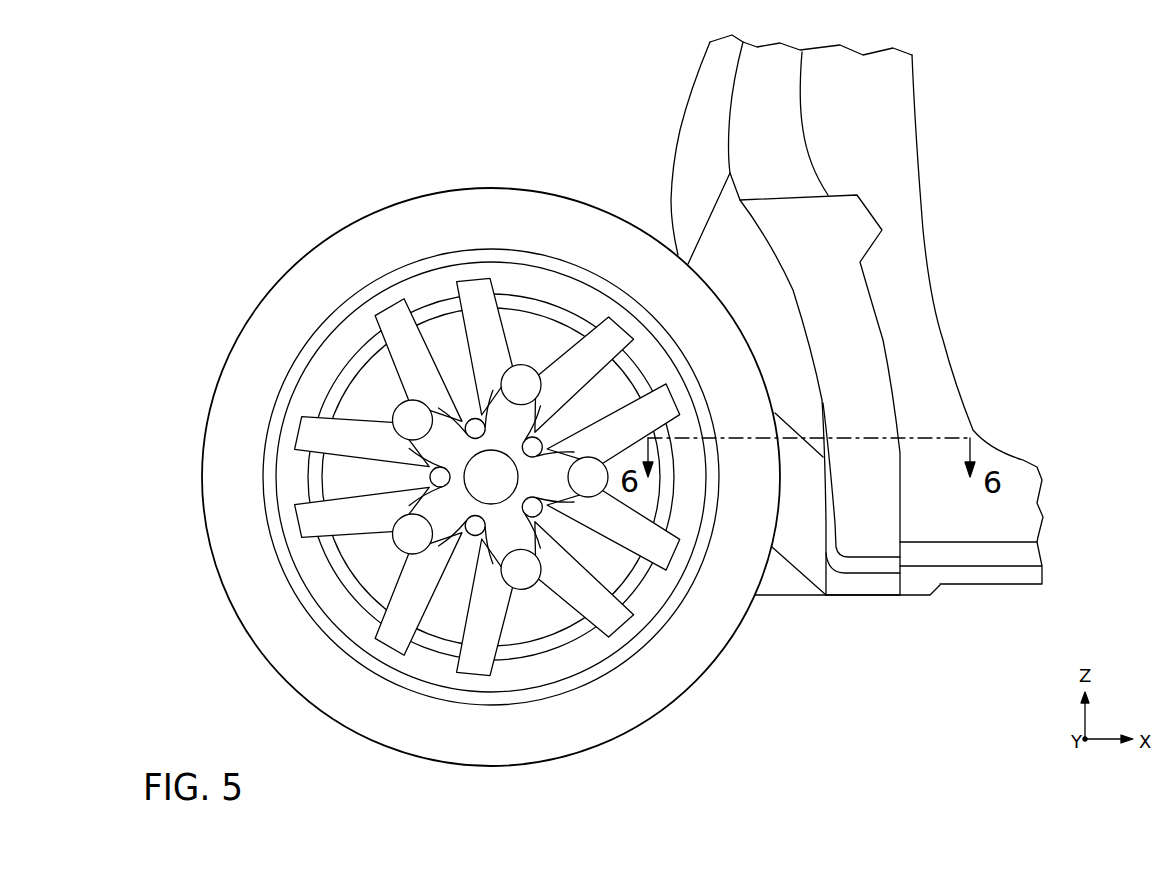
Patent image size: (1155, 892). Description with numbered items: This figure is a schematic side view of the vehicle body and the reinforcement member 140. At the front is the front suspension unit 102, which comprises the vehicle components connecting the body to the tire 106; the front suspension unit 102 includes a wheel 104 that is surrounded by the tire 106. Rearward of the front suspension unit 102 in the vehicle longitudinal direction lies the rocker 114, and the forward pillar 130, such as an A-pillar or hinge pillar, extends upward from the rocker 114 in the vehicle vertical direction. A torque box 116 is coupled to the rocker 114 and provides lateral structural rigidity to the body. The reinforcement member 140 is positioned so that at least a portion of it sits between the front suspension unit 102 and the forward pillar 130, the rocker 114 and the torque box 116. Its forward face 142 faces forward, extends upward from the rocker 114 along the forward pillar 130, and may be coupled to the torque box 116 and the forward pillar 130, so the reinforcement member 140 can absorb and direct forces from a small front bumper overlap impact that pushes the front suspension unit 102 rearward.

The front suspension unit 102 is at (446, 480).
The wheel 104 is at (280, 570).
The tire 106 is at (333, 720).
The rocker 114 is at (985, 607).
The torque box 116 is at (795, 580).
The forward pillar 130 is at (895, 108).
The reinforcement member 140 is at (853, 630).
The forward face 142 is at (777, 257).